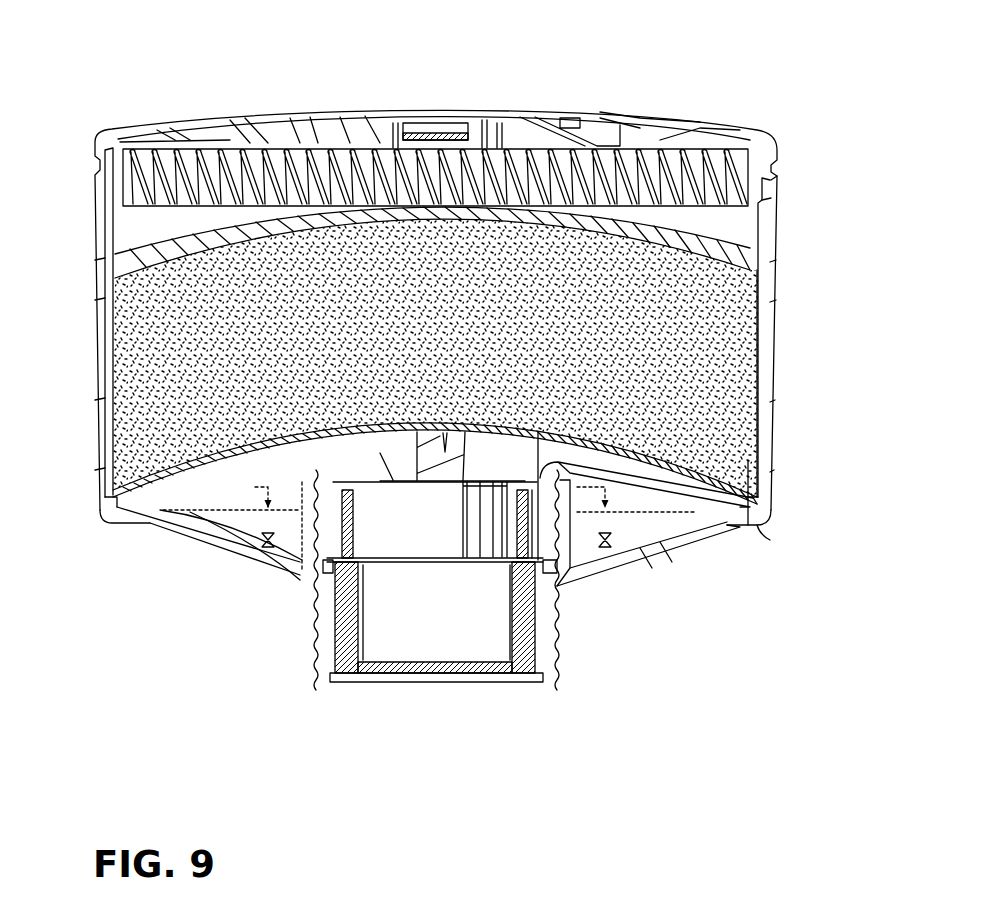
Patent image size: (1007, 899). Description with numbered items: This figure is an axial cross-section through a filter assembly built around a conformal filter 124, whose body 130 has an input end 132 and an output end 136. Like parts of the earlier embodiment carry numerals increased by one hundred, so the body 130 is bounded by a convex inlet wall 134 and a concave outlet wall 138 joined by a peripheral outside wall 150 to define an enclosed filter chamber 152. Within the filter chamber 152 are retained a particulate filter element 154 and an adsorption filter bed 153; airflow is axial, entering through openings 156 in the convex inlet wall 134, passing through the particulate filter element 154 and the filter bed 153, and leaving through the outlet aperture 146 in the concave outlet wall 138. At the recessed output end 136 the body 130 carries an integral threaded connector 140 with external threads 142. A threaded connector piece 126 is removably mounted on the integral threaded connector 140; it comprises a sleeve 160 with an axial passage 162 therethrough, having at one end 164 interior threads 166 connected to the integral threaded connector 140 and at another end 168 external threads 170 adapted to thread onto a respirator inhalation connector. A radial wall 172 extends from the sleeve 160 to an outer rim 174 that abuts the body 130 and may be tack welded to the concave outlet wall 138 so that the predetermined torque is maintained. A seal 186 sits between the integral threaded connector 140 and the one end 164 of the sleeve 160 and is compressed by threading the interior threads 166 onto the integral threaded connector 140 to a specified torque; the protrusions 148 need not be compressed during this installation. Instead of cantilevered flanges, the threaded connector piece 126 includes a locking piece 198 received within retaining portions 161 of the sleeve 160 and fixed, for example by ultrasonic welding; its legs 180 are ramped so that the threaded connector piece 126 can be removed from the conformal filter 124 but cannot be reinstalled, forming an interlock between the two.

The conformal filter 124 is at (705, 88).
The threaded connector piece 126 is at (545, 690).
The body 130 is at (782, 413).
The input end 132 is at (604, 105).
The convex inlet wall 134 is at (627, 115).
The output end 136 is at (217, 492).
The concave outlet wall 138 is at (253, 490).
The integral threaded connector 140 is at (565, 472).
The external threads 142 is at (583, 512).
The outlet aperture 146 is at (462, 563).
The protrusions 148 is at (452, 527).
The peripheral outside wall 150 is at (777, 240).
The filter chamber 152 is at (680, 333).
The filter bed 153 is at (177, 381).
The particulate filter element 154 is at (733, 168).
The openings 156 is at (580, 112).
The sleeve 160 is at (313, 603).
The retaining portions 161 is at (375, 692).
The axial passage 162 is at (442, 625).
The one end 164 is at (312, 558).
The interior threads 166 is at (320, 578).
The another end 168 is at (566, 628).
The external threads 170 is at (561, 594).
The radial wall 172 is at (667, 551).
The outer rim 174 is at (748, 535).
The legs 180 is at (362, 505).
The seal 186 is at (314, 594).
The locking piece 198 is at (350, 685).